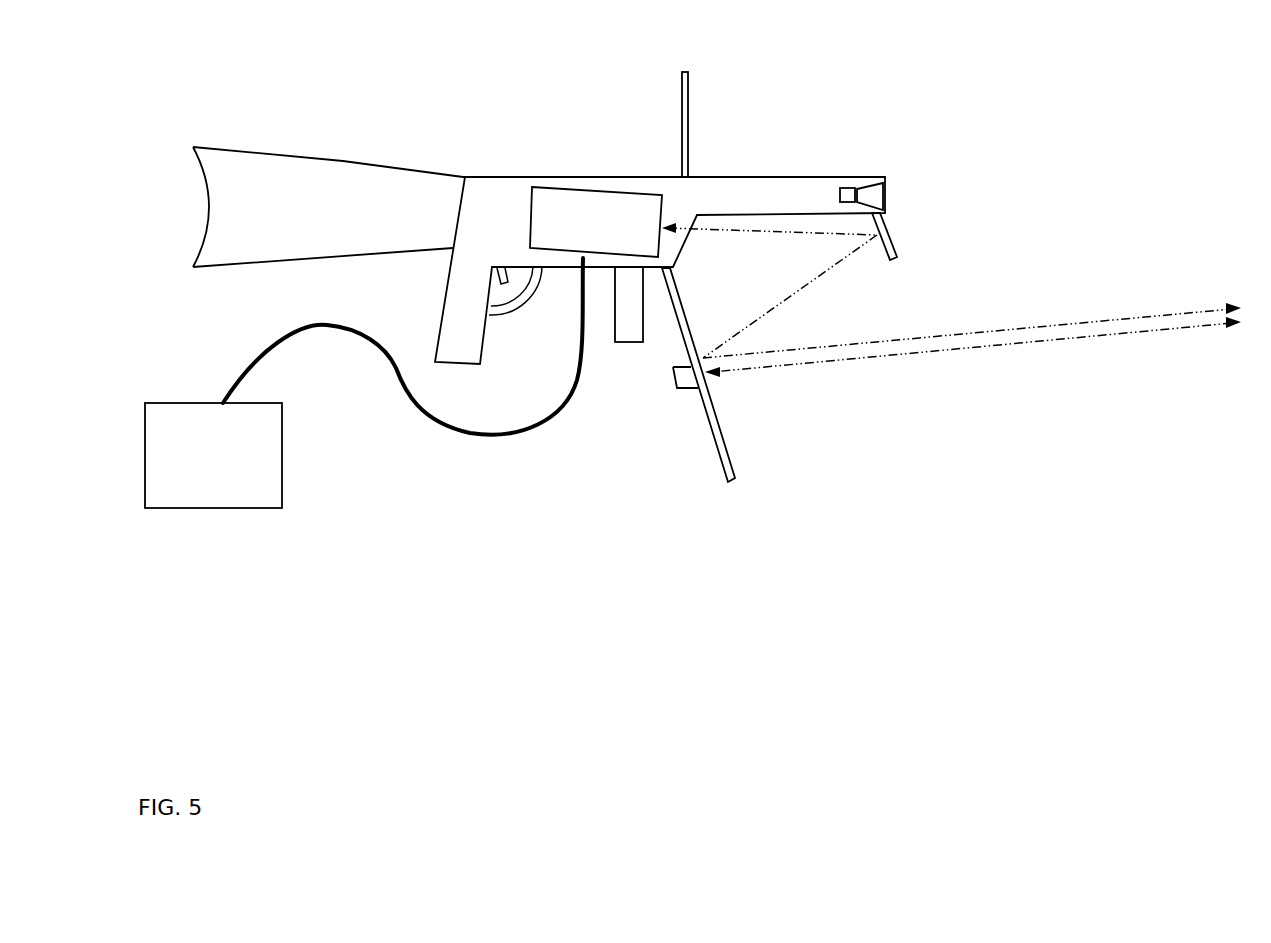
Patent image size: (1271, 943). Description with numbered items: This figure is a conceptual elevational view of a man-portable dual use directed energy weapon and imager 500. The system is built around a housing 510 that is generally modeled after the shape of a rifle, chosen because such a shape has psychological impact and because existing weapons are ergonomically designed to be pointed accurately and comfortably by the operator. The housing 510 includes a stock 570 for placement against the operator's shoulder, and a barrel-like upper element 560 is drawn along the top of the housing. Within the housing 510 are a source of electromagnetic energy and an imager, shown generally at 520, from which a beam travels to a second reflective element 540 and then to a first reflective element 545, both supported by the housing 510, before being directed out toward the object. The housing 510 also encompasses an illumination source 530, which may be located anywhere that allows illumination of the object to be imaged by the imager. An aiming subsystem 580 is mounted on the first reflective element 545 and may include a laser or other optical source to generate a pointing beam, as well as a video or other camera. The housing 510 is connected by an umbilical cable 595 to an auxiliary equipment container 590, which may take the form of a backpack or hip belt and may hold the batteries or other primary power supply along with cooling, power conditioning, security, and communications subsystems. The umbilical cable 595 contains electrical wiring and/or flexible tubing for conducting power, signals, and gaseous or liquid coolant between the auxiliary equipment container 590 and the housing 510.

The dual use directed energy weapon and imager 500 is at (222, 51).
The housing 510 is at (538, 177).
The source of electromagnetic energy and imager 520 is at (590, 189).
The illumination source 530 is at (885, 177).
The second reflective element 540 is at (893, 236).
The first reflective element 545 is at (718, 455).
The barrel / sight 560 is at (681, 72).
The stock 570 is at (343, 161).
The aiming subsystem 580 is at (675, 390).
The auxiliary equipment container 590 is at (215, 508).
The umbilical cable 595 is at (483, 437).